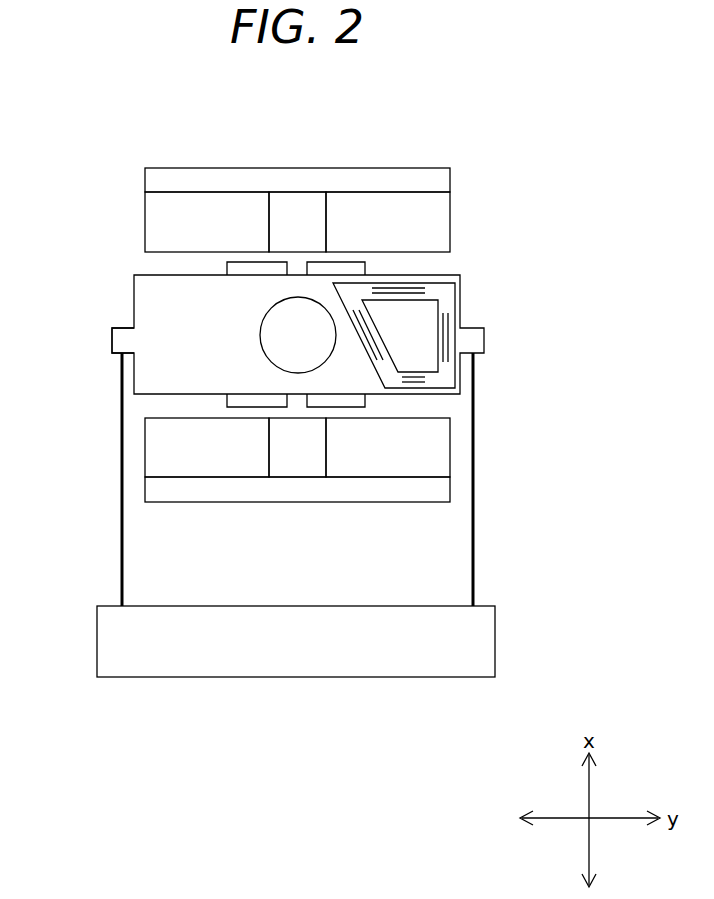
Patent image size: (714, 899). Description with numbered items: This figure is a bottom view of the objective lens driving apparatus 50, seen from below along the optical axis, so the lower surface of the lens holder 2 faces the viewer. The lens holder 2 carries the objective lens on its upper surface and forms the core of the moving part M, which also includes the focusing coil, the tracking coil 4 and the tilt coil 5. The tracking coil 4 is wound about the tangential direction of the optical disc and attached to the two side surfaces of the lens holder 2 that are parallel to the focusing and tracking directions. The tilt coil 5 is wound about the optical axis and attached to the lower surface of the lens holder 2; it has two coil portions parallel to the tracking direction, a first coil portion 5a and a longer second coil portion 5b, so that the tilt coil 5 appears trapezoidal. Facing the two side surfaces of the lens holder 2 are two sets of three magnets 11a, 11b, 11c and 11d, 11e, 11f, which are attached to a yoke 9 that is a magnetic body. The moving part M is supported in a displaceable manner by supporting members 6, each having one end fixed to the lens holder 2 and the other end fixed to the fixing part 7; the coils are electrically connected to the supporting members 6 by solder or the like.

The objective lens driving apparatus 50 is at (506, 194).
The lens holder 2 is at (143, 312).
The tracking coil 4 is at (235, 272).
The tilt coil 5 is at (450, 318).
The first coil portion 5a is at (420, 382).
The second coil portion 5b is at (415, 293).
The supporting member 6 is at (122, 523).
The fixing part 7 is at (303, 669).
The yoke 9 is at (358, 178).
The magnet 11a is at (208, 205).
The magnet 11b is at (298, 205).
The magnet 11c is at (405, 205).
The magnet 11d is at (206, 467).
The magnet 11e is at (305, 467).
The magnet 11f is at (398, 467).
The moving part M is at (134, 371).